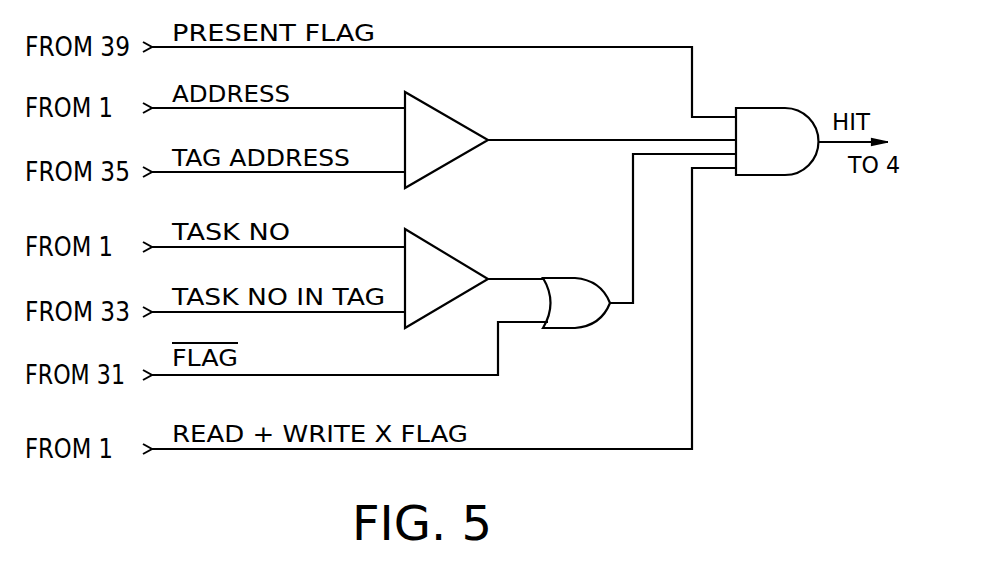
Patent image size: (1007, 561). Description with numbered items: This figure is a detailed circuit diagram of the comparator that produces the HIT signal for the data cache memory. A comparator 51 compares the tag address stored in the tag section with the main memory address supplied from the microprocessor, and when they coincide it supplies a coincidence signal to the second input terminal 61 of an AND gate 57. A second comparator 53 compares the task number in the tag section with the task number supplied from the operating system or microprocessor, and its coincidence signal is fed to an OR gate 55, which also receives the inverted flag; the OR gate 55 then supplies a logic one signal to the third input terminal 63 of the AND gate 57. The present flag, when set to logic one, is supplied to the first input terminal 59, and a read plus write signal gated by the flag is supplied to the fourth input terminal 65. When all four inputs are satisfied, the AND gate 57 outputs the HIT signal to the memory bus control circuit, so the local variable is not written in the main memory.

The comparator 51 is at (443, 114).
The comparator 53 is at (445, 253).
The OR gate 55 is at (578, 278).
The AND gate 57 is at (783, 108).
The first input terminal 59 is at (713, 117).
The second input terminal 61 is at (652, 140).
The third input terminal 63 is at (671, 156).
The fourth input terminal 65 is at (692, 213).